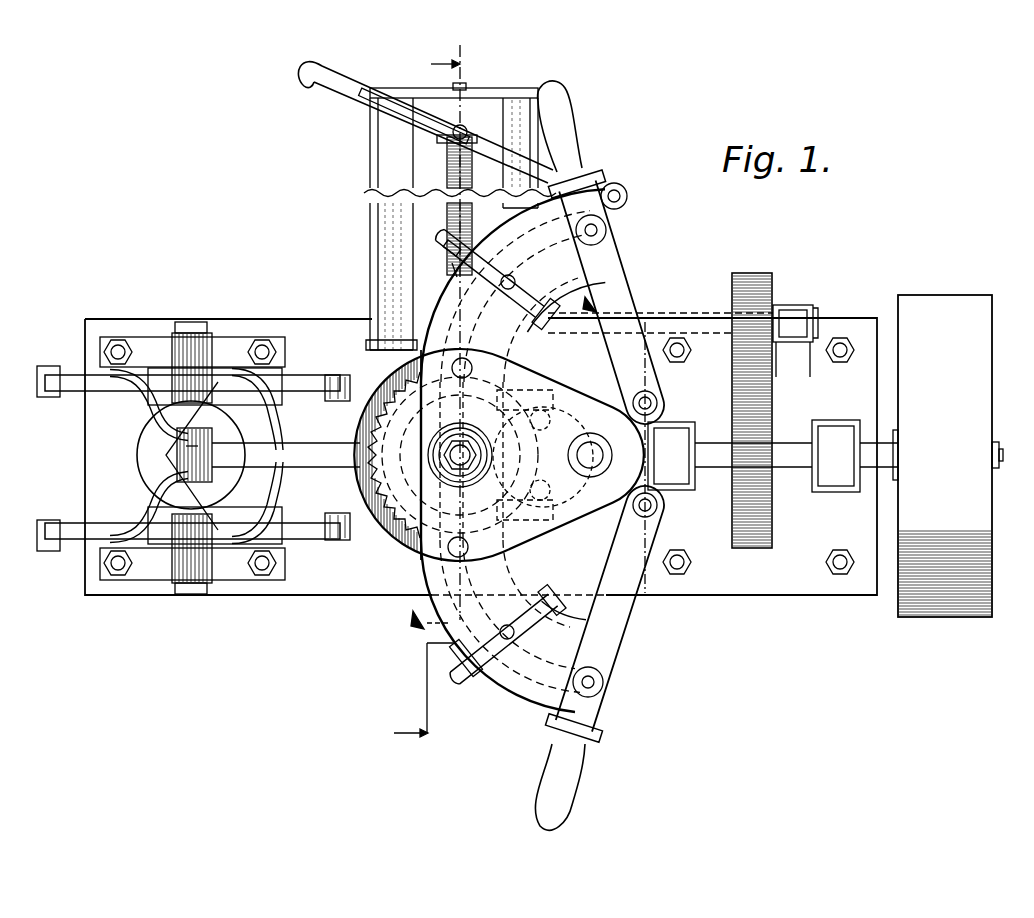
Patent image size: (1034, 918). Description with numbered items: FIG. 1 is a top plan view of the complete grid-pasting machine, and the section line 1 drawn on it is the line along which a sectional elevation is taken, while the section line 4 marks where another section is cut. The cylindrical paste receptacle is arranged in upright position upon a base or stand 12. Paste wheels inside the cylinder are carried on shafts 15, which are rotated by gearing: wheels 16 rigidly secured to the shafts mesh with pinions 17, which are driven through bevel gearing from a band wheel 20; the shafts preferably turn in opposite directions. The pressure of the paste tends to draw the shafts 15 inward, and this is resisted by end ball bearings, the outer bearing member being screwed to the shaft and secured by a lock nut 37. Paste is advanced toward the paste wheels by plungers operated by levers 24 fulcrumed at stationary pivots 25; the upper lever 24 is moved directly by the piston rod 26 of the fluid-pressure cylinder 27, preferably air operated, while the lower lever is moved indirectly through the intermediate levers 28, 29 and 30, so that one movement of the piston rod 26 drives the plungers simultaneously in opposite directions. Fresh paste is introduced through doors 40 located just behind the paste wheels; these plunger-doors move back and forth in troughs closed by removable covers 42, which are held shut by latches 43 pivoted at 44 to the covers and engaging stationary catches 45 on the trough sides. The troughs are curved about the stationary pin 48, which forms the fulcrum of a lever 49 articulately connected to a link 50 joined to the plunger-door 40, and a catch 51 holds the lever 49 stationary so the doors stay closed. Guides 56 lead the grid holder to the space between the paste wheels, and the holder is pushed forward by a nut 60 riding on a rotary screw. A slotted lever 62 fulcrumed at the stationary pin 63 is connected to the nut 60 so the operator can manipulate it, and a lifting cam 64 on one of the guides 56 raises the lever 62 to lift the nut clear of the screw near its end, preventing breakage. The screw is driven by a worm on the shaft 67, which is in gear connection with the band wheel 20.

The section line 1 is at (423, 692).
The section line 4— 4 is at (448, 330).
The base or stand 12 is at (360, 588).
The shafts 15 is at (477, 461).
The wheels 16 is at (378, 484).
The pinions 17 is at (582, 404).
The band wheel 20 is at (948, 456).
The levers 24 is at (285, 474).
The stationary pivots 25 is at (360, 400).
The piston rod 26 is at (220, 441).
The fluid-pressure cylinder 27 is at (143, 441).
The intermediate lever 28 is at (137, 400).
The intermediate lever 29 is at (185, 447).
The intermediate lever 30 is at (304, 392).
The lock nut 37 is at (472, 453).
The doors 40 is at (487, 457).
The removable covers 42 is at (498, 695).
The latches 43 is at (443, 235).
The latch pivot 44 is at (515, 452).
The stationary catches 45 is at (556, 612).
The stationary pin 48 is at (657, 404).
The lever 49 is at (570, 150).
The link 50 is at (606, 232).
The catch 51 is at (593, 174).
The guides 56 is at (531, 143).
The nut 60 is at (450, 142).
The slotted lever 62 is at (347, 80).
The stationary pin 63 is at (627, 197).
The lifting cam 64 is at (373, 334).
The shaft 67 is at (701, 318).